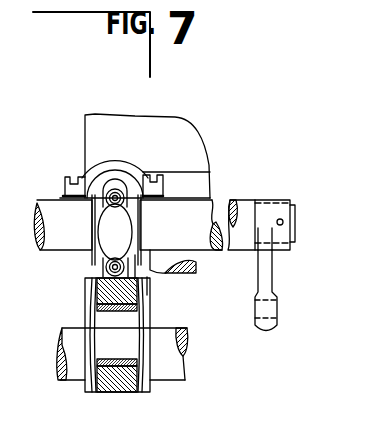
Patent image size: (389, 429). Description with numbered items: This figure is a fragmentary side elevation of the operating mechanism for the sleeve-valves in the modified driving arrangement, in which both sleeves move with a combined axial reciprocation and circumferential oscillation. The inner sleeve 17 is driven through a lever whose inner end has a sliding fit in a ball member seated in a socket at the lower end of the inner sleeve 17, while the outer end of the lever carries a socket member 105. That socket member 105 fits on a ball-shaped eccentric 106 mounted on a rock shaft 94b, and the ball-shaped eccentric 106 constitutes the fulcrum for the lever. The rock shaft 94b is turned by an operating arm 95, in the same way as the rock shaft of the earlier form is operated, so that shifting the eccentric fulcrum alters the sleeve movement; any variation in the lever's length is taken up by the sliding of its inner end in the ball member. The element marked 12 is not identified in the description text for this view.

The inner sleeve 17 is at (85, 156).
The socket member 105 is at (122, 196).
The ball-shaped eccentric 106 is at (100, 245).
The rock shaft 94b is at (214, 200).
The operating arm 95 is at (273, 278).
The bracket 12 is at (188, 258).